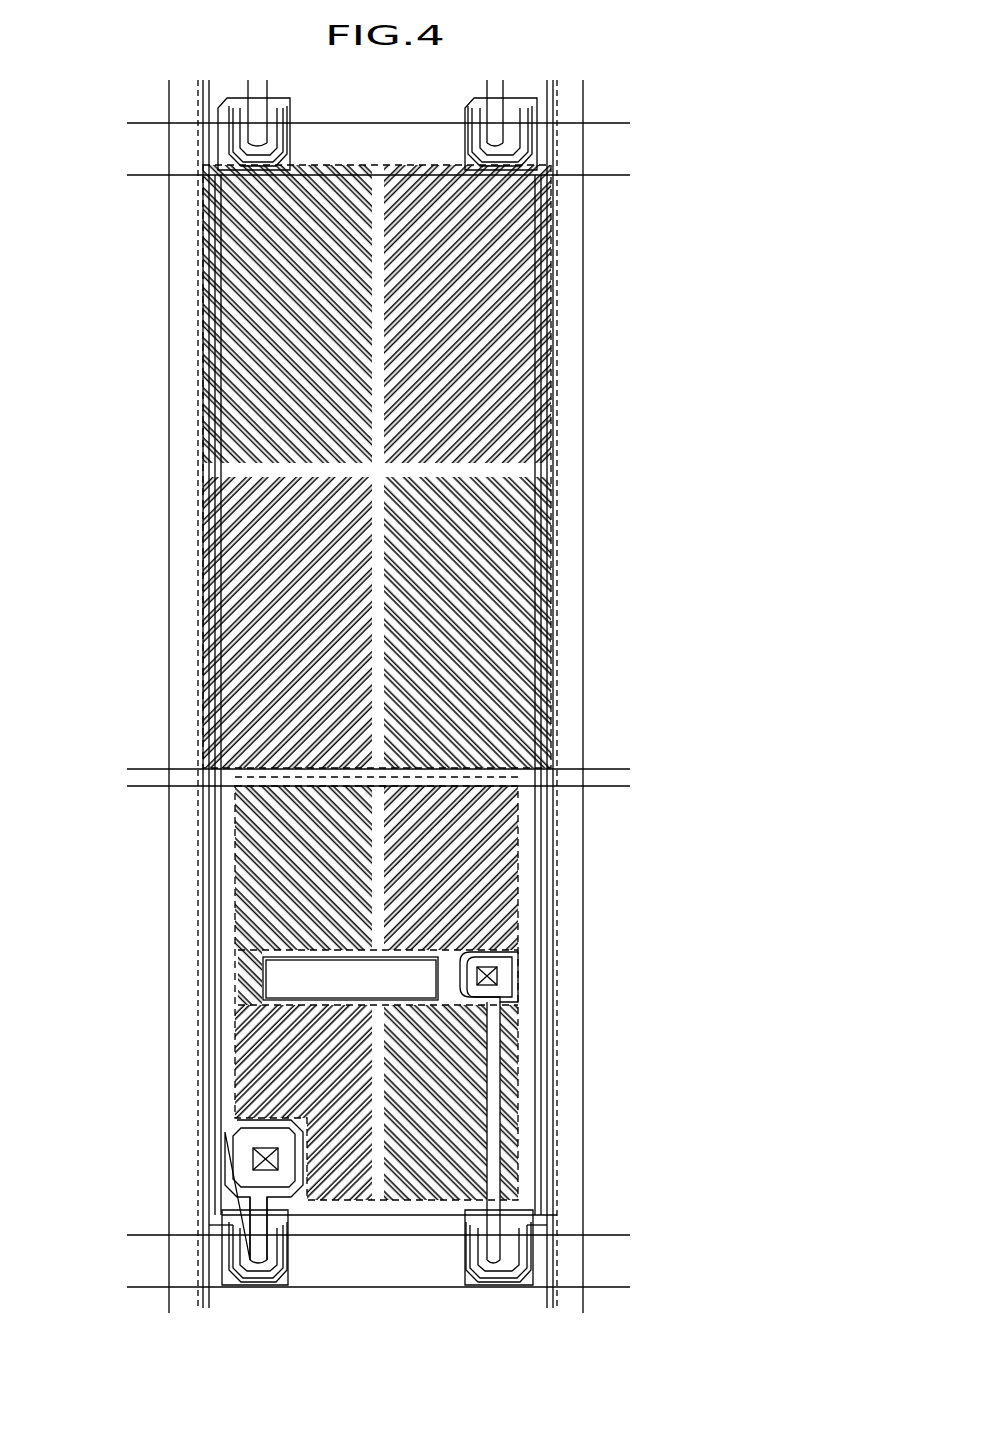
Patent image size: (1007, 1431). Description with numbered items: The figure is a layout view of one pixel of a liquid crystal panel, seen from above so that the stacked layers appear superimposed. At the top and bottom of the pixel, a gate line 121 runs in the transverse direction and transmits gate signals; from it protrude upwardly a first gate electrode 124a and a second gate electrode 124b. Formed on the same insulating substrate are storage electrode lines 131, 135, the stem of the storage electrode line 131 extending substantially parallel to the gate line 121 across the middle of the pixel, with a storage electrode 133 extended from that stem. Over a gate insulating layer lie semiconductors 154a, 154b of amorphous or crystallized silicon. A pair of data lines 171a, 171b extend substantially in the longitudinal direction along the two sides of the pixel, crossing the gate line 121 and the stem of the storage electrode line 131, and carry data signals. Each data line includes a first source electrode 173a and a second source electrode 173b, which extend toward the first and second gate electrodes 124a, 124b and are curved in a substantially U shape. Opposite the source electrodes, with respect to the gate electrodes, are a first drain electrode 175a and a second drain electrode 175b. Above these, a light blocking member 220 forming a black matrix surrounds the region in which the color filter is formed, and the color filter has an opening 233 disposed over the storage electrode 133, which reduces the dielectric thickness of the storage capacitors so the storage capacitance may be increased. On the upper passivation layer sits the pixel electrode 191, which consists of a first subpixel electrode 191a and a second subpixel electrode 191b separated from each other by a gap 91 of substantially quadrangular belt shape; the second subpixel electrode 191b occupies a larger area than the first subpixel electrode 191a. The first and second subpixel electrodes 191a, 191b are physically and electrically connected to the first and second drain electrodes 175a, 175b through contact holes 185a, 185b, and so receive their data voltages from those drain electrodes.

The light blocking member 220 is at (553, 298).
The second subpixel electrode 191b is at (552, 440).
The first subpixel electrode 191a is at (510, 870).
The pixel electrode 191 is at (737, 605).
The gap 91 is at (215, 770).
The storage electrode line 131 is at (563, 769).
The storage electrode line 135 is at (220, 853).
The storage electrode 133 is at (298, 934).
The opening 233 is at (263, 978).
The contact hole 185a is at (497, 976).
The contact hole 185b is at (253, 1158).
The data line 171a is at (556, 1102).
The data line 171b is at (209, 1038).
The first drain electrode 175a is at (505, 1140).
The second drain electrode 175b is at (232, 1172).
The gate line 121 is at (597, 1232).
The first gate electrode 124a is at (458, 1230).
The second gate electrode 124b is at (292, 1227).
The first source electrode 173a is at (468, 1242).
The second source electrode 173b is at (282, 1247).
The semiconductor 154a is at (533, 1232).
The semiconductor 154b is at (222, 1232).